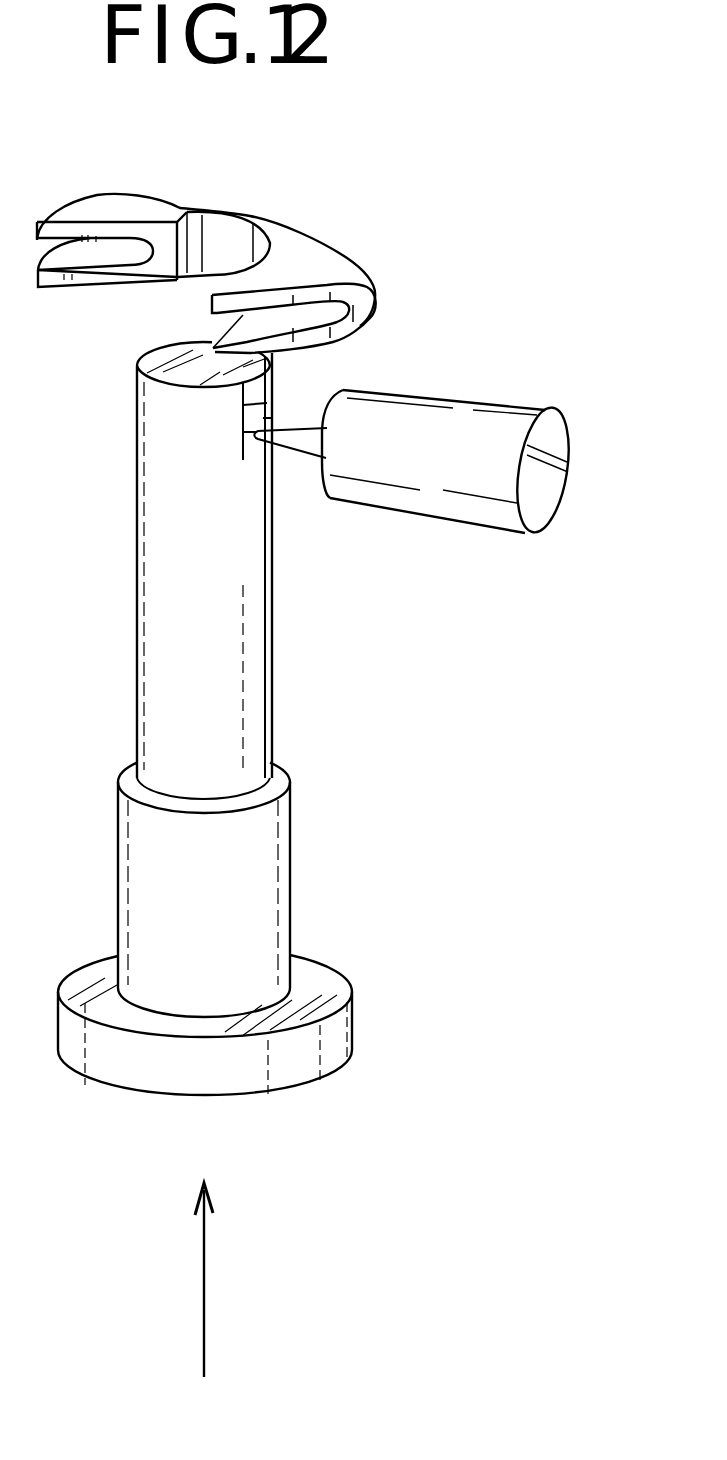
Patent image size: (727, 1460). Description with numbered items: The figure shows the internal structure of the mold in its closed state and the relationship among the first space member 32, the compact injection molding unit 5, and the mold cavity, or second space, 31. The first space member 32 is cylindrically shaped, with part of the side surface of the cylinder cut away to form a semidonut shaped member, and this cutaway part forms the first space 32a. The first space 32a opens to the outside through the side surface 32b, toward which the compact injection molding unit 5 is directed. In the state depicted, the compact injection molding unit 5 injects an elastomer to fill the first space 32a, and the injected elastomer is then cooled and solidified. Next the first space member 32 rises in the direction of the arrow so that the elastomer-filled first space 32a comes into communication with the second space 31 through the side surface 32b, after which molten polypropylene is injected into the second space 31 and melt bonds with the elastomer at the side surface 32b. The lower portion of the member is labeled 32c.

The mold cavity (second space) 31 is at (335, 257).
The first space member 32 is at (252, 903).
The first space 32a is at (272, 408).
The side surface 32b is at (273, 420).
The pillar 32c is at (252, 730).
The compact injection molding unit 5 is at (500, 410).